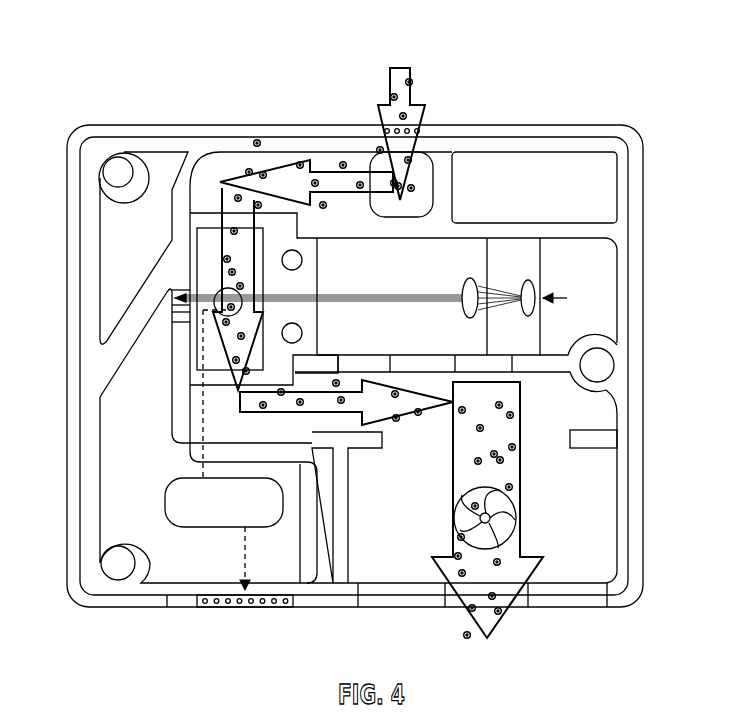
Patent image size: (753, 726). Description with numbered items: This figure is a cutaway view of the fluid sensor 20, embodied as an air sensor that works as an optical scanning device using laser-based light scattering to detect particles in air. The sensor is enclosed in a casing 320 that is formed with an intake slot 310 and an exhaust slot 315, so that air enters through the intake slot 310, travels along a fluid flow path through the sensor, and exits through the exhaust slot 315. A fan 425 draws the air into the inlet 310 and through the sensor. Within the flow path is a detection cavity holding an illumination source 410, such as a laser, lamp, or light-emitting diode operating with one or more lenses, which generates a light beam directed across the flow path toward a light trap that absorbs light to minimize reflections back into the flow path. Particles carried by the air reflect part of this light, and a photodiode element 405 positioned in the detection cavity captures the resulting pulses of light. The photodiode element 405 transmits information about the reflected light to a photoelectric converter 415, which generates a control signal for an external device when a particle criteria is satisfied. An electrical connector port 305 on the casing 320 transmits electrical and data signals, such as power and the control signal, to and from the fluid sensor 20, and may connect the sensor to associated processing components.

The fluid sensor 20 is at (411, 42).
The casing 320 is at (657, 283).
The intake slot 310 is at (437, 98).
The exhaust slot 315 is at (540, 636).
The electrical connector port 305 is at (224, 609).
The photodiode element 405 is at (213, 272).
The illumination source 410 is at (567, 255).
The photoelectric converter 415 is at (168, 480).
The fan 425 is at (527, 505).